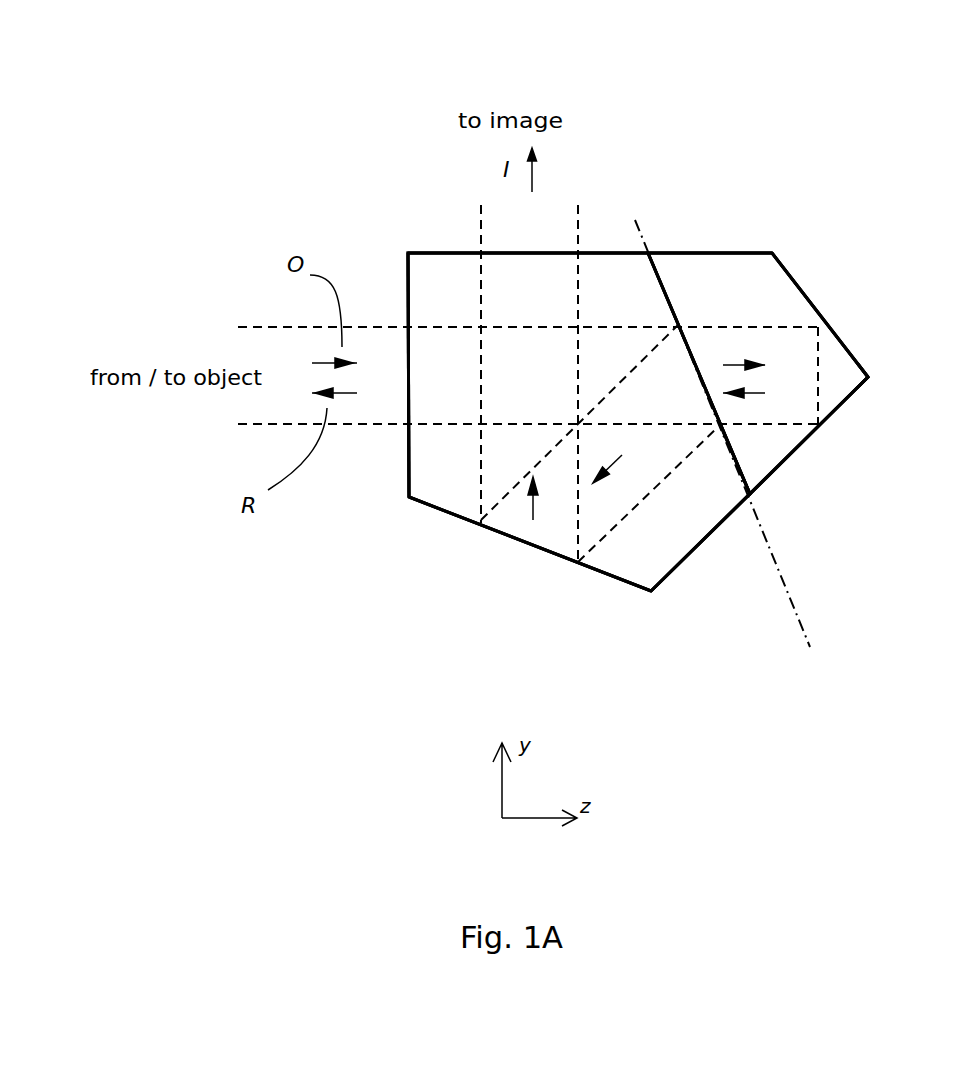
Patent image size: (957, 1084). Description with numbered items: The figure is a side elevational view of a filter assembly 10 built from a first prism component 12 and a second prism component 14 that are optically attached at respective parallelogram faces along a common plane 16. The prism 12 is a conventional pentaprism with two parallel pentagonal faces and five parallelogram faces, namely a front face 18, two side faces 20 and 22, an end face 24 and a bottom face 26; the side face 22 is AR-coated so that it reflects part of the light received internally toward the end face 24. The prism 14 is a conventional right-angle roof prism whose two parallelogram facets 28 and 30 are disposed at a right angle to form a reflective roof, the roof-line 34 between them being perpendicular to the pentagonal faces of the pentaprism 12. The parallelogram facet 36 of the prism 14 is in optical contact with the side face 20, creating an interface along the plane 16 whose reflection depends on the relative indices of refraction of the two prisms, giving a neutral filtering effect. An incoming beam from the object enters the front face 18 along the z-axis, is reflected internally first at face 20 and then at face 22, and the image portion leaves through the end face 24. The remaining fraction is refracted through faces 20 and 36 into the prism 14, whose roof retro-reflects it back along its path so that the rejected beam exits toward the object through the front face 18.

The filter assembly 10 is at (398, 172).
The first prism component 12 is at (660, 557).
The second prism component 14 is at (762, 277).
The common plane 16 is at (770, 537).
The front face 18 is at (408, 476).
The side face 20 is at (668, 290).
The side face 22 is at (435, 508).
The end face 24 is at (606, 252).
The bottom face 26 is at (698, 553).
The parallelogram facet 28 is at (795, 453).
The parallelogram facet 30 is at (840, 336).
The roof-line 34 is at (872, 378).
The parallelogram facet 36 is at (730, 462).